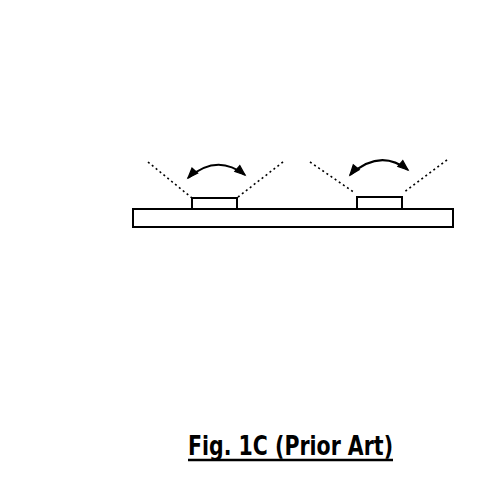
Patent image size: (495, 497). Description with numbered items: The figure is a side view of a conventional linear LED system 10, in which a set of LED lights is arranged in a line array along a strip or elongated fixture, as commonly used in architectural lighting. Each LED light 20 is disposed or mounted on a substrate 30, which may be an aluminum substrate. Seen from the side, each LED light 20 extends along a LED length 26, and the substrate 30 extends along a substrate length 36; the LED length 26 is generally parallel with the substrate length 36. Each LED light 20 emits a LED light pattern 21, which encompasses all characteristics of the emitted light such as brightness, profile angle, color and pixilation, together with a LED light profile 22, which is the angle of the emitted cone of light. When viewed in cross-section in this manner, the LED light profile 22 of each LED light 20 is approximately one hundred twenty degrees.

The linear LED system 10 is at (100, 78).
The LED light 20 is at (244, 204).
The LED light pattern 21 is at (175, 152).
The LED light profile 22 is at (222, 162).
The LED length 26 is at (216, 214).
The substrate 30 is at (126, 215).
The substrate length 36 is at (412, 235).